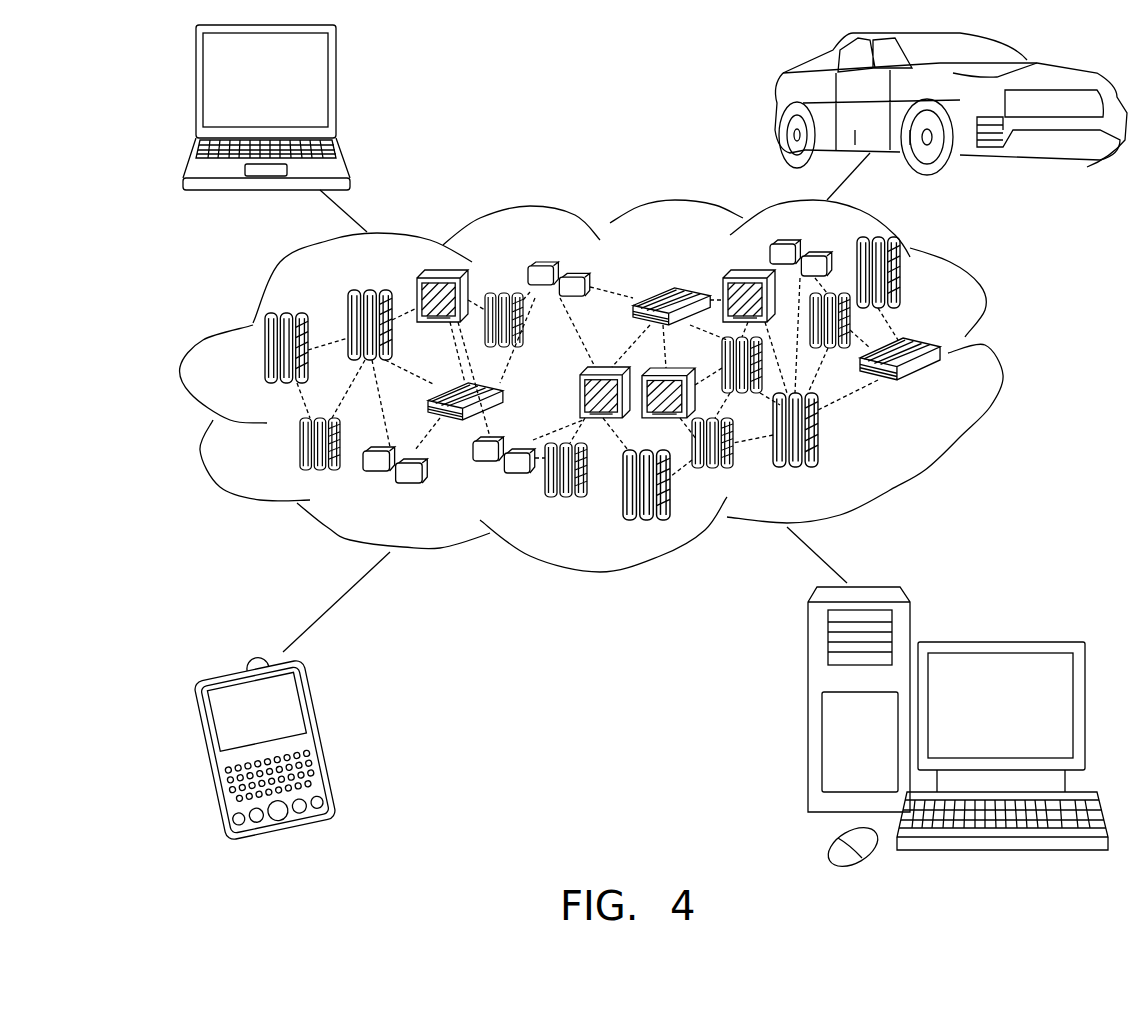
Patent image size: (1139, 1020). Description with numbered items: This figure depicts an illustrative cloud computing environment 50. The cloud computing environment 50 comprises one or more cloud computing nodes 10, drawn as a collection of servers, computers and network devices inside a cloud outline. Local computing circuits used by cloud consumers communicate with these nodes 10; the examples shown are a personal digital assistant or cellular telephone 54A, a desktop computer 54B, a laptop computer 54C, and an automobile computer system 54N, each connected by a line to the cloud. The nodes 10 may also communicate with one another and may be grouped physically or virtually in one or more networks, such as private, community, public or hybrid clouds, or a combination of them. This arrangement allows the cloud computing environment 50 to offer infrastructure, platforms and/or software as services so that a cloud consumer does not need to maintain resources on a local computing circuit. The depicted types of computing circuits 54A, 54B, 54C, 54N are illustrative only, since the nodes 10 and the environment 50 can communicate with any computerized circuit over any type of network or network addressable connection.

The cloud computing nodes 10 is at (940, 388).
The cloud computing environment 50 is at (1003, 357).
The personal digital assistant (PDA) or cellular telephone 54A is at (327, 737).
The desktop computer 54B is at (998, 640).
The laptop computer 54C is at (336, 88).
The automobile computer system 54N is at (773, 103).